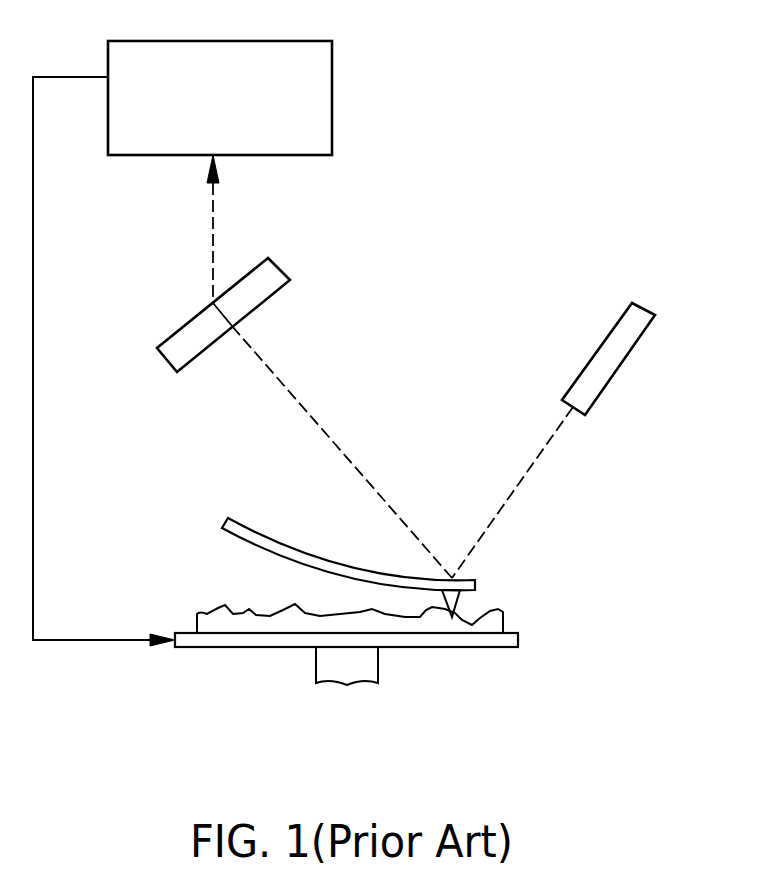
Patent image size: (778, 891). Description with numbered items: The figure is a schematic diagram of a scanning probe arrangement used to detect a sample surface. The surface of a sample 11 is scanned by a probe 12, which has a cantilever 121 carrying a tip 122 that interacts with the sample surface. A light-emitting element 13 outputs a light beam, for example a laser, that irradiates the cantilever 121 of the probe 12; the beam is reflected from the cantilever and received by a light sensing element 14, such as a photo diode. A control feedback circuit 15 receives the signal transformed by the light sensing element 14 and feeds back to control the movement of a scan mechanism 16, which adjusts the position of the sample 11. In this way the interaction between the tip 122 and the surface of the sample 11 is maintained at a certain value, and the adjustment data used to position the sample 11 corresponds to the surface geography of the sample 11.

The sample 11 is at (215, 625).
The probe 12 is at (412, 559).
The cantilever 121 is at (362, 582).
The tip 122 is at (453, 602).
The light-emitting element 13 is at (642, 318).
The light sensing element 14 is at (198, 332).
The control feedback circuit 15 is at (315, 82).
The scan mechanism 16 is at (508, 642).